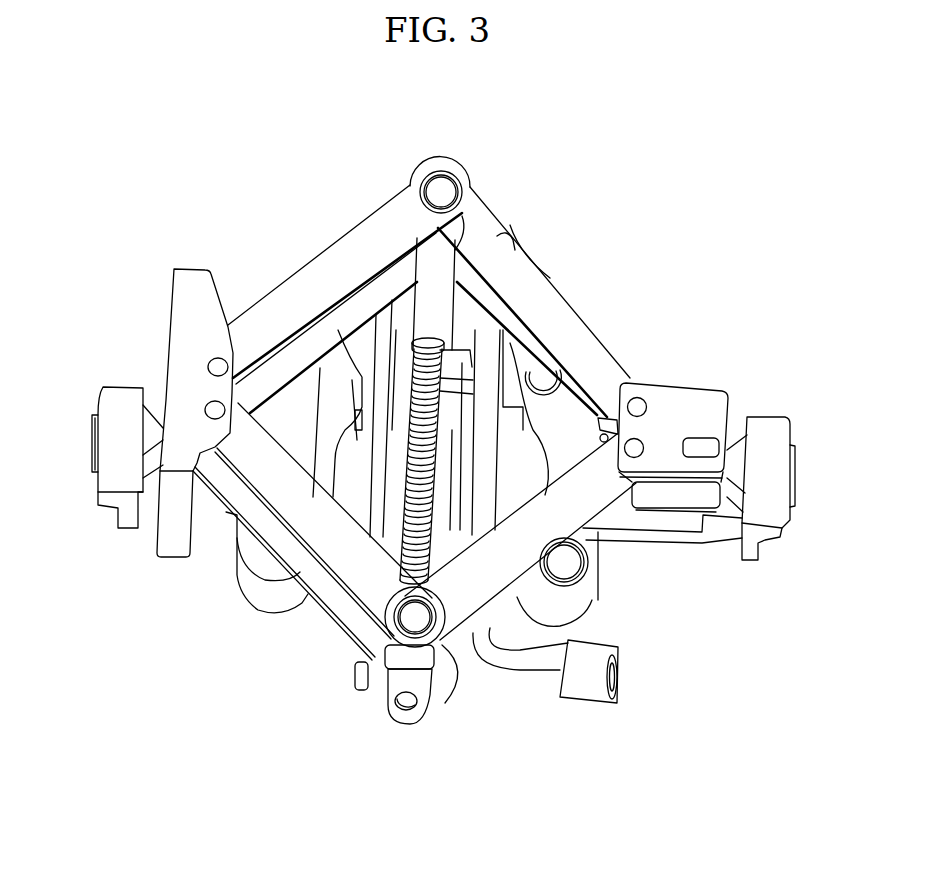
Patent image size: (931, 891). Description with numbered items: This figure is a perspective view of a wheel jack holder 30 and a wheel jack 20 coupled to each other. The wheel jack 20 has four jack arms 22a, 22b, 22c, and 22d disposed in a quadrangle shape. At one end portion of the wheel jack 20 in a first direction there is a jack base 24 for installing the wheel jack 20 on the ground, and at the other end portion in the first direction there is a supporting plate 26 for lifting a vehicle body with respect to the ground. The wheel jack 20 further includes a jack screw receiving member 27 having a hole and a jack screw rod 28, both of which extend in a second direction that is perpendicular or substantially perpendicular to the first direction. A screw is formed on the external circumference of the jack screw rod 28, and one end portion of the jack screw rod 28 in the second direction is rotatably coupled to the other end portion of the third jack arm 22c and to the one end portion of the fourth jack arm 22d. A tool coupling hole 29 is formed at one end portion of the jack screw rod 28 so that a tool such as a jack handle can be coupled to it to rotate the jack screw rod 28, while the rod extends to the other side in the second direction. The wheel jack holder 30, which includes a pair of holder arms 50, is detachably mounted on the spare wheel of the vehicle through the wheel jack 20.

The wheel jack 20 is at (580, 280).
The first jack arm 22a is at (563, 333).
The second jack arm 22b is at (320, 265).
The third jack arm 22c is at (302, 557).
The fourth jack arm 22d is at (583, 532).
The jack base 24 is at (185, 290).
The supporting plate 26 is at (683, 400).
The jack screw receiving member 27 is at (433, 278).
The jack screw rod 28 is at (437, 539).
The tool coupling hole 29 is at (410, 703).
The wheel jack holder 30 is at (220, 615).
The holder arm 50 is at (108, 530).